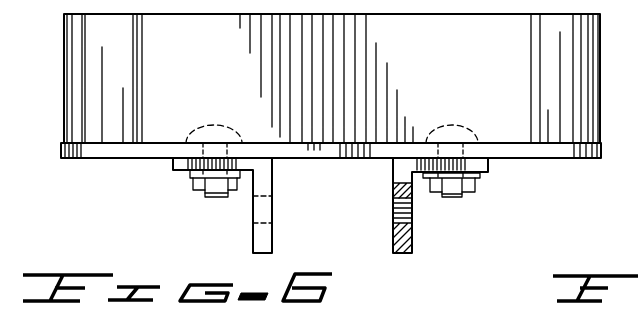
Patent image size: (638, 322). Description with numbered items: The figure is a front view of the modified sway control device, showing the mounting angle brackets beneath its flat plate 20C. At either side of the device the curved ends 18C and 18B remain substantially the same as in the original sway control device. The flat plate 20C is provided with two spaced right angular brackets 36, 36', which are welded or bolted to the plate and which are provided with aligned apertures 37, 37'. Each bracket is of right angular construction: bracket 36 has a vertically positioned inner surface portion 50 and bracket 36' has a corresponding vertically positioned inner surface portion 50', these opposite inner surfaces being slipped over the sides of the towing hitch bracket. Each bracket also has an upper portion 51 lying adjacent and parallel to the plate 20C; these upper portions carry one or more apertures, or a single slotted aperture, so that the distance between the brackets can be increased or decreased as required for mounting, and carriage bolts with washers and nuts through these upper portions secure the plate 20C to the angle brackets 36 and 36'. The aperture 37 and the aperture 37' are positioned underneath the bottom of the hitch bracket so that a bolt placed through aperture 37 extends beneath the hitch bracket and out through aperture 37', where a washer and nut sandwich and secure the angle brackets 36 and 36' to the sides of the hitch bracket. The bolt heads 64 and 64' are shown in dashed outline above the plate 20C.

The curved end 18C is at (66, 74).
The curved end 18B is at (600, 72).
The flat plate 20C is at (163, 150).
The bolt head 64 is at (214, 137).
The bolt head 64' is at (452, 138).
The vertically positioned inner surface portion 50 is at (240, 205).
The vertically positioned inner surface portion 50' is at (421, 205).
The upper portion 51 is at (182, 178).
The aperture 37 is at (239, 207).
The aperture 37' is at (424, 208).
The right angular bracket 36 is at (239, 233).
The right angular bracket 36' is at (421, 237).